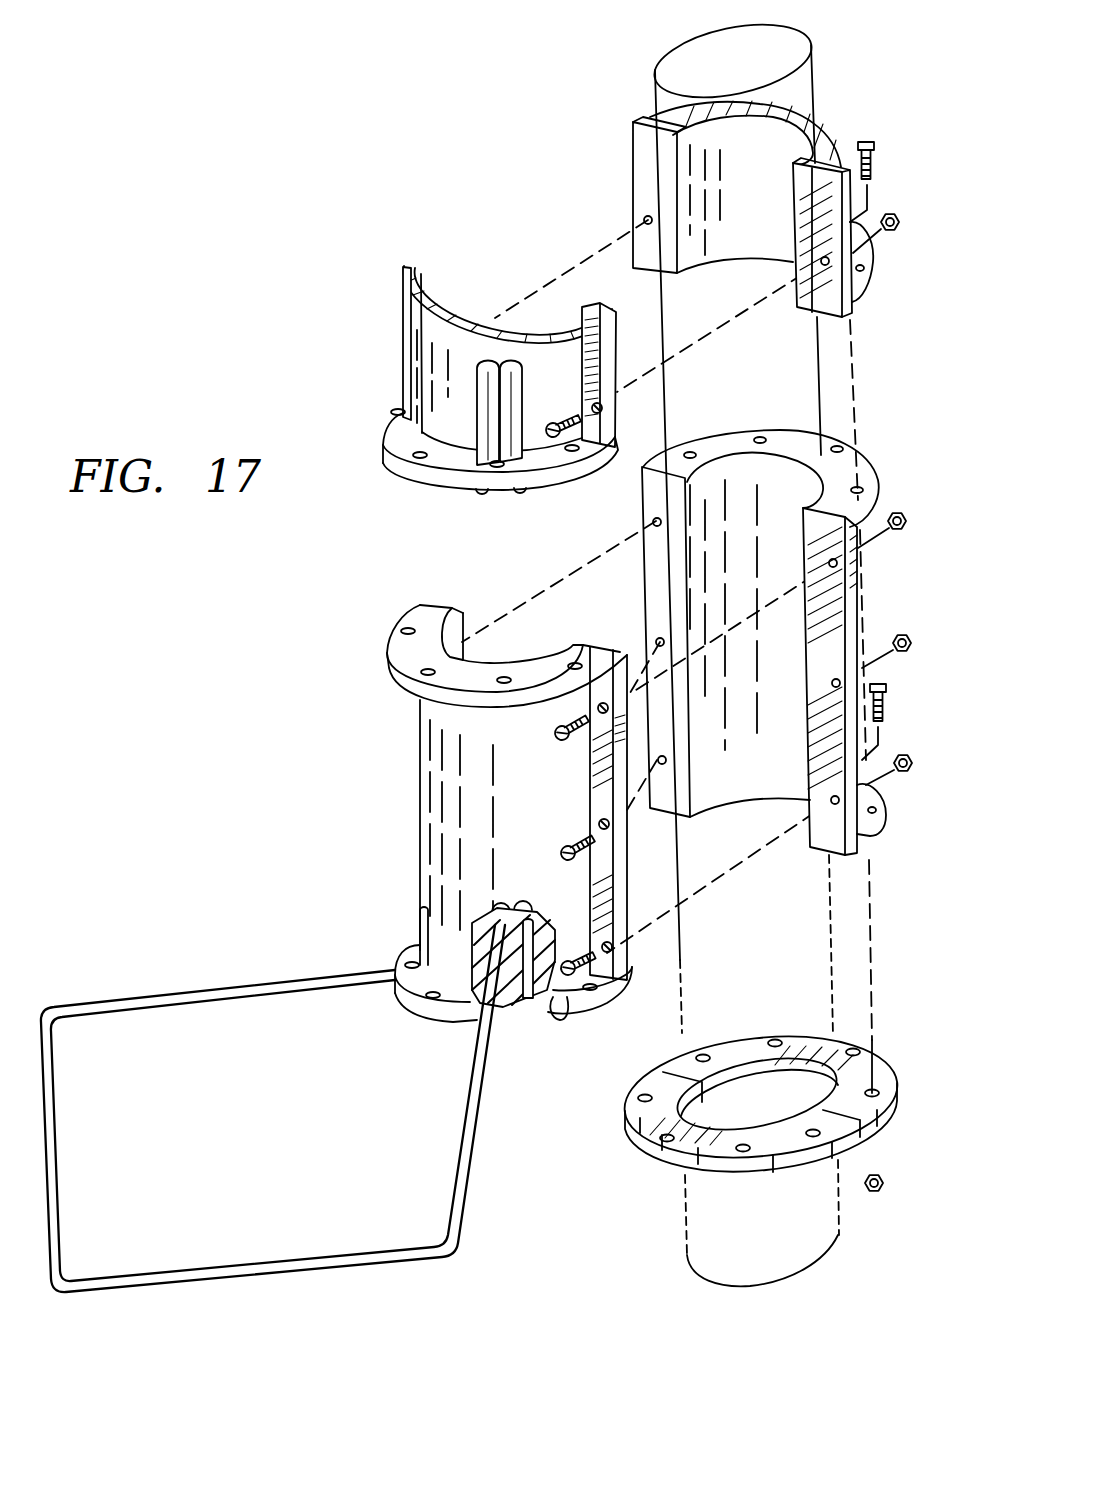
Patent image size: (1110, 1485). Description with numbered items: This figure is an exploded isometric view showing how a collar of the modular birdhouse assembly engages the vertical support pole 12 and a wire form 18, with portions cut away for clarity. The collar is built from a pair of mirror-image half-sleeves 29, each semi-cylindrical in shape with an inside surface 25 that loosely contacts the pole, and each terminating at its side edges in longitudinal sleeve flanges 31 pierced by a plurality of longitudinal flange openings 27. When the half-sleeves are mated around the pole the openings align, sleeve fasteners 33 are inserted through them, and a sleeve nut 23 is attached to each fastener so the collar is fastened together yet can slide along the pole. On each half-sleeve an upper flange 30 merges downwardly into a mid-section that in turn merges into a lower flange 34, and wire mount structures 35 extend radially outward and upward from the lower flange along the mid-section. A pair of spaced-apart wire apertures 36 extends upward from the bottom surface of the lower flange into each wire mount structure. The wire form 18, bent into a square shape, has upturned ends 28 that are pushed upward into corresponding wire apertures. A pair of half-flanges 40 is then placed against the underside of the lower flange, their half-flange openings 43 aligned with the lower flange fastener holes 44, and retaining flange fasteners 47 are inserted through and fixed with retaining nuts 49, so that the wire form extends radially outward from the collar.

The support pole 12 is at (654, 90).
The wire form 18 is at (176, 988).
The sleeve nut 23 is at (900, 512).
The inside surface 25 is at (742, 472).
The longitudinal flange openings 27 is at (836, 566).
The upturned ends 28 is at (497, 947).
The half-sleeves 29 is at (396, 291).
The upper flange 30 is at (400, 682).
The longitudinal sleeve flanges 31 is at (640, 147).
The sleeve fasteners 33 is at (553, 424).
The lower flange 34 is at (506, 487).
The wire mount structures 35 is at (483, 365).
The wire apertures 36 is at (480, 937).
The half-flanges 40 is at (738, 1038).
The half-flange openings 43 is at (776, 1040).
The lower flange fastener holes 44 is at (408, 462).
The retaining flange fasteners 47 is at (876, 174).
The retaining nuts 49 is at (877, 1192).